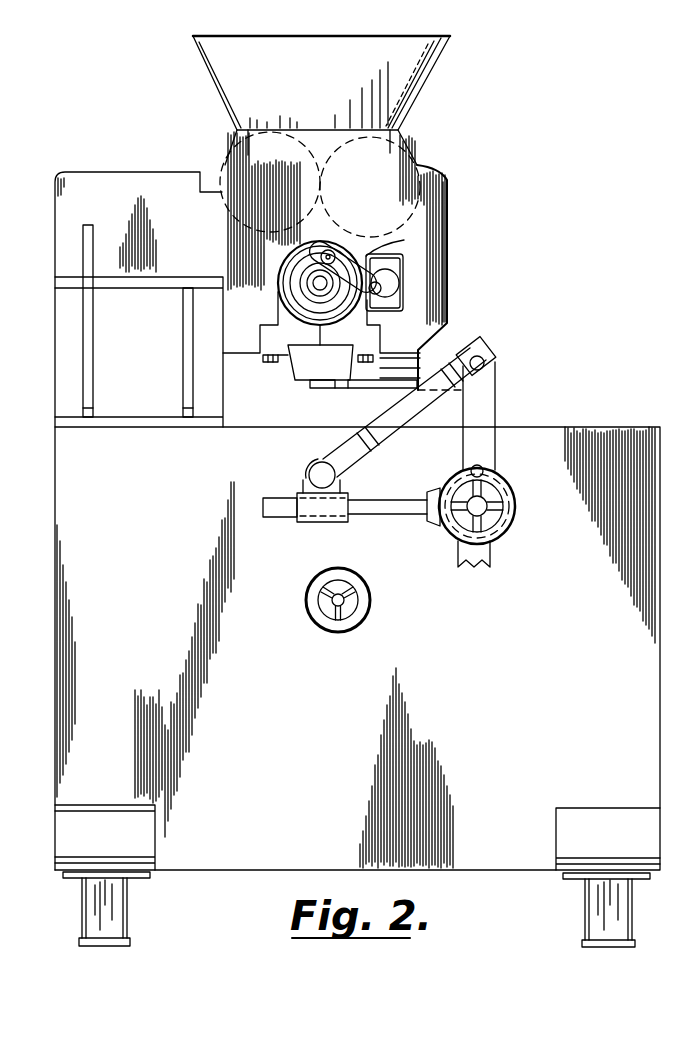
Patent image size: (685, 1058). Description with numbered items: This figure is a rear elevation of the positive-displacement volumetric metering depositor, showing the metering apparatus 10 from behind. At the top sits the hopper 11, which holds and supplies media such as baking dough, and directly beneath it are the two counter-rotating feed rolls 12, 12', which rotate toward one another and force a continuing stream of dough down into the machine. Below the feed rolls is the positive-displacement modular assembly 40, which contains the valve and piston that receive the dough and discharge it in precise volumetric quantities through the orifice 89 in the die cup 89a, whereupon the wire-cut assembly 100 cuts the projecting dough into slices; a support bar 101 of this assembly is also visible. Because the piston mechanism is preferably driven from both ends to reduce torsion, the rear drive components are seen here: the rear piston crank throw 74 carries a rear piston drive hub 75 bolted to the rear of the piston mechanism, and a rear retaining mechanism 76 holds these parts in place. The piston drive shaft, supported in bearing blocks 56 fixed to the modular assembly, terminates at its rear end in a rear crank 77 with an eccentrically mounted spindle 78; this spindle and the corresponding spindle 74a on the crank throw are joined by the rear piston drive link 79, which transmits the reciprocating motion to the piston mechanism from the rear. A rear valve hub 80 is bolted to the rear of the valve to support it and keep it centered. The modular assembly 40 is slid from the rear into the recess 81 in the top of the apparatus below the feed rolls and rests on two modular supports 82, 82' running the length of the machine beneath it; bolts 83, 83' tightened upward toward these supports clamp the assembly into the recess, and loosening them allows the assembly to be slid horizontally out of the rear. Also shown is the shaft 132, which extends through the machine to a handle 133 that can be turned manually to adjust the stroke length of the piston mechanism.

The metering apparatus 10 is at (457, 208).
The hopper 11 is at (215, 80).
The feed roll 12 is at (249, 182).
The feed roll 12' is at (402, 176).
The positive-displacement modular assembly 40 is at (281, 313).
The bearing block 56 is at (405, 262).
The rear piston crank throw 74 is at (343, 300).
The spindle 74a is at (330, 251).
The rear piston drive hub 75 is at (279, 263).
The rear retaining mechanism 76 is at (292, 256).
The rear crank 77 is at (404, 292).
The spindle 78 is at (404, 304).
The rear piston drive link 79 is at (380, 250).
The rear valve hub 80 is at (318, 284).
The recess 81 is at (284, 268).
The modular support 82 is at (385, 348).
The modular support 82' is at (261, 376).
The bolt 83 is at (376, 389).
The bracket 83' is at (254, 368).
The orifice 89 is at (308, 381).
The die cup 89a is at (322, 363).
The wire-cut assembly 100 is at (497, 378).
The support bar 101 is at (435, 397).
The shaft 132 is at (358, 590).
The handle 133 is at (362, 614).